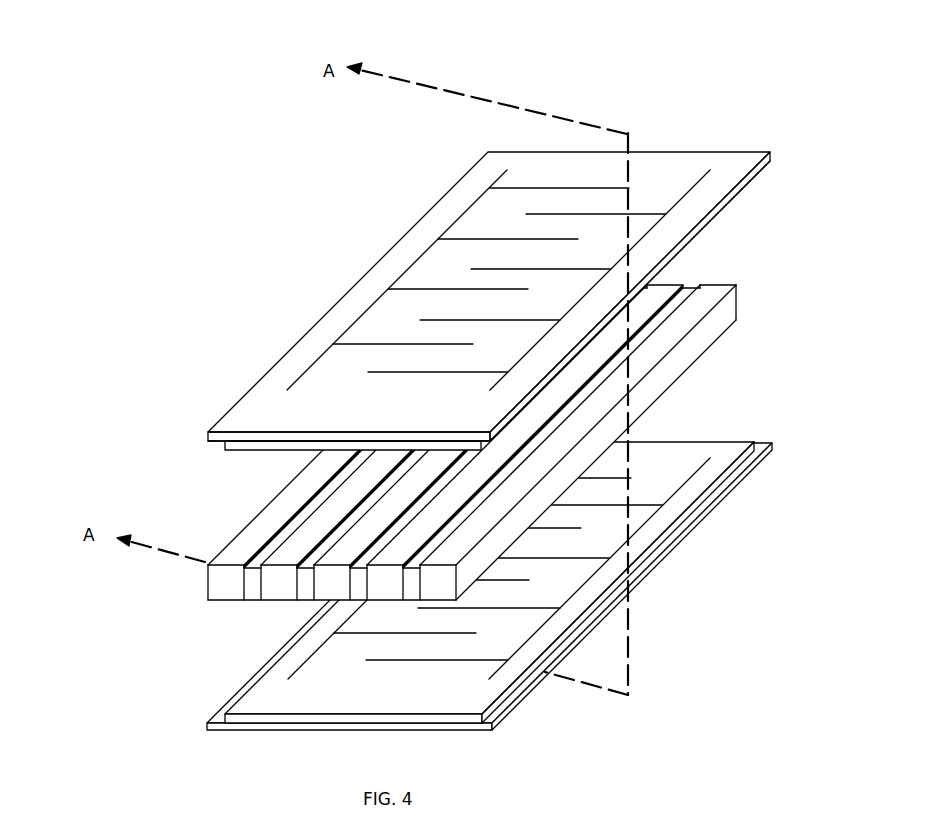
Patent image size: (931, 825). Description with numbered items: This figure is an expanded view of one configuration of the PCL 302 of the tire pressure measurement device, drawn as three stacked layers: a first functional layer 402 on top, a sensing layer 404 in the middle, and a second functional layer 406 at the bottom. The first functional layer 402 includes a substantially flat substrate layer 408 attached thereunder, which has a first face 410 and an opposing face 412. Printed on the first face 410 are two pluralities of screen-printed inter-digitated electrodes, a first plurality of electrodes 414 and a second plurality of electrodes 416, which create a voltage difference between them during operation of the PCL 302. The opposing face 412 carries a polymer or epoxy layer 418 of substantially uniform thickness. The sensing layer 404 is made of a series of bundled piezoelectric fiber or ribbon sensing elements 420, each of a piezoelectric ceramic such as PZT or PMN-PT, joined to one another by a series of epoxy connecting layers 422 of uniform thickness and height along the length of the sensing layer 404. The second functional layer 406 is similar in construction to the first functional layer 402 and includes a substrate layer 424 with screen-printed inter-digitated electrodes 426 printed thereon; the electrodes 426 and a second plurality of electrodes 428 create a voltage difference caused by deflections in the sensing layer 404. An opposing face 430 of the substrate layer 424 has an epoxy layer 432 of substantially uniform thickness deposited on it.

The PCL 302 is at (433, 447).
The first functional layer 402 is at (452, 292).
The sensing layer 404 is at (412, 475).
The second functional layer 406 is at (433, 596).
The substrate layer 408 is at (758, 170).
The first face 410 is at (346, 409).
The opposing face 412 is at (222, 446).
The first plurality of electrodes 414 is at (473, 201).
The second plurality of electrodes 416 is at (694, 185).
The polymer or epoxy layer 418 is at (306, 447).
The sensing elements 420 is at (247, 548).
The epoxy connecting layers 422 is at (306, 587).
The substrate layer 424 is at (775, 453).
The electrodes 426 is at (700, 468).
The second plurality of electrodes 428 is at (292, 668).
The opposing face 430 is at (215, 721).
The epoxy layer 432 is at (690, 508).